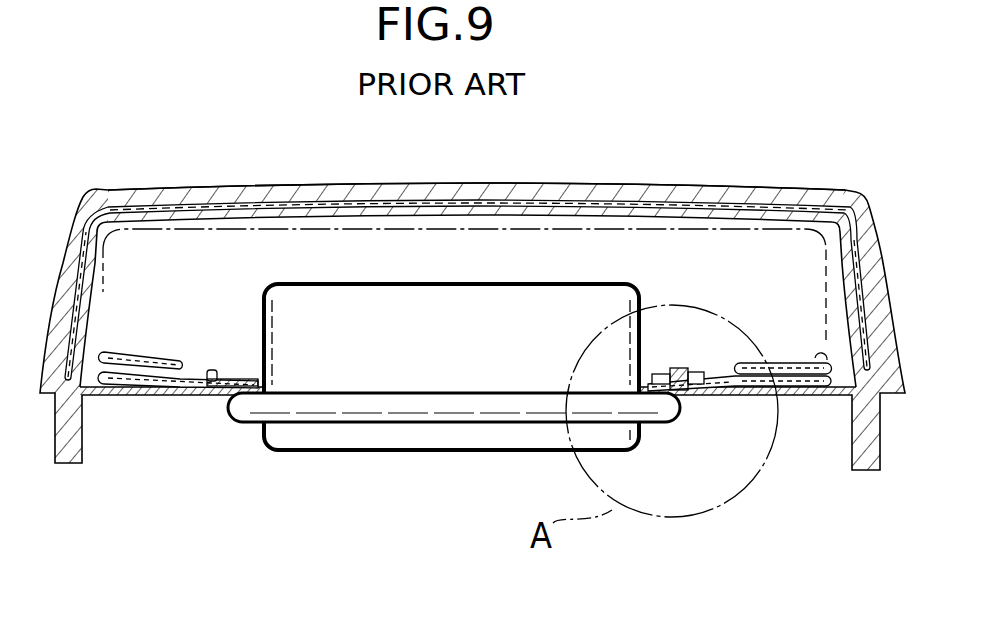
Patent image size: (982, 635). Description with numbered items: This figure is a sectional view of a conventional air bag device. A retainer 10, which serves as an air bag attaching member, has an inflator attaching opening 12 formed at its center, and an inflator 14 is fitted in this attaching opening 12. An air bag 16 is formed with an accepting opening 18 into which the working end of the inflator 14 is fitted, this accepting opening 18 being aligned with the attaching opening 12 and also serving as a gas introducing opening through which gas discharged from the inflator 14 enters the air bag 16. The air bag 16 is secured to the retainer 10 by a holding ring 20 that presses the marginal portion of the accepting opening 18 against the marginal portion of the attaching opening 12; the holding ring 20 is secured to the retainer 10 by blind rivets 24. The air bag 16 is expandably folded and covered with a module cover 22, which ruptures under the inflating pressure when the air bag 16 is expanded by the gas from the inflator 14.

The retainer 10 is at (153, 402).
The inflator attaching opening 12 is at (247, 424).
The inflator 14 is at (395, 452).
The air bag 16 is at (277, 220).
The accepting opening 18 is at (270, 380).
The holding ring 20 is at (225, 372).
The module cover 22 is at (706, 185).
The blind rivet 24 is at (672, 367).